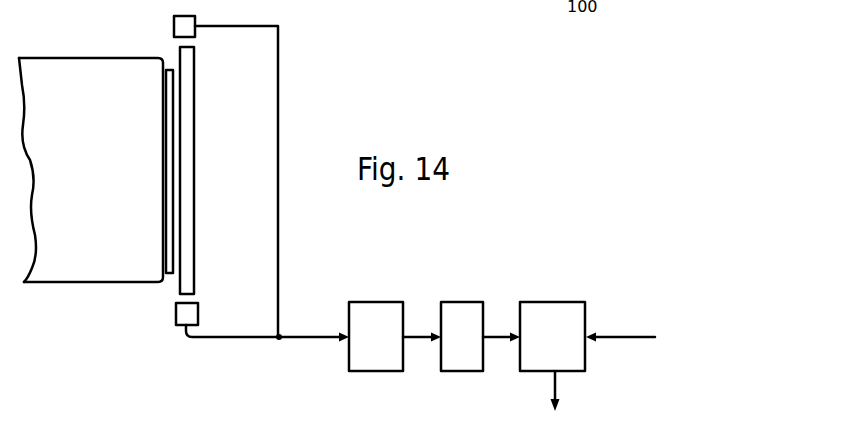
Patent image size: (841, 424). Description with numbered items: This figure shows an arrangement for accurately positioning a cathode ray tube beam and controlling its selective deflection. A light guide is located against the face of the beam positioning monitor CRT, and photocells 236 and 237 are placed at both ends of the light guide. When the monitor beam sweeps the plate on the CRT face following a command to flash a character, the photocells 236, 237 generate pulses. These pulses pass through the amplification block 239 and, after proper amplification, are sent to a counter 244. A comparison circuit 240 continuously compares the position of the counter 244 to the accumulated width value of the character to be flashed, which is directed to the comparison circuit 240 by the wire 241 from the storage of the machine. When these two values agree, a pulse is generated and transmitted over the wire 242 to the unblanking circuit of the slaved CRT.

The photocell 236 is at (174, 22).
The photocell 237 is at (176, 317).
The amplification block 239 is at (374, 311).
The counter 244 is at (462, 309).
The comparison circuit 240 is at (549, 309).
The wire 241 is at (622, 331).
The wire 242 is at (558, 388).